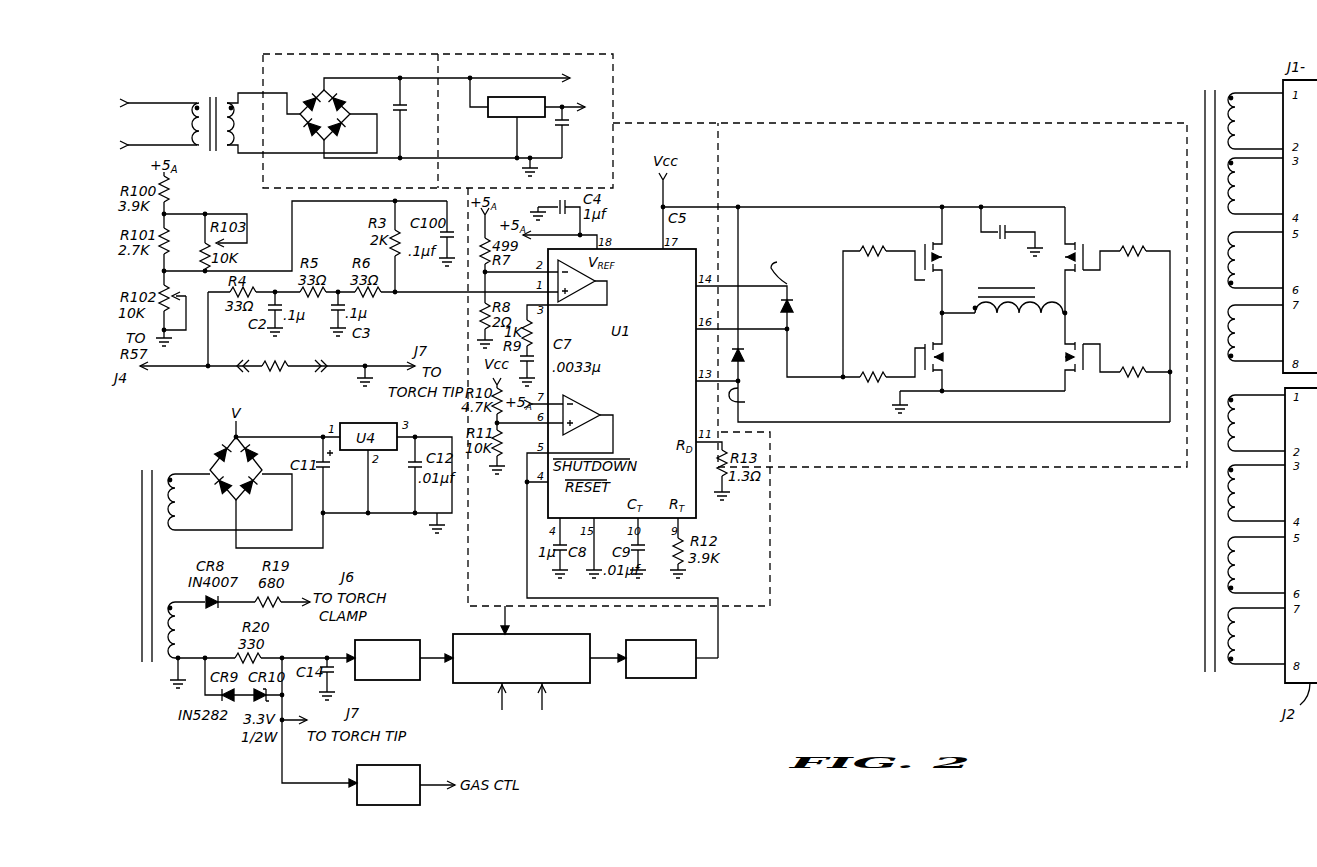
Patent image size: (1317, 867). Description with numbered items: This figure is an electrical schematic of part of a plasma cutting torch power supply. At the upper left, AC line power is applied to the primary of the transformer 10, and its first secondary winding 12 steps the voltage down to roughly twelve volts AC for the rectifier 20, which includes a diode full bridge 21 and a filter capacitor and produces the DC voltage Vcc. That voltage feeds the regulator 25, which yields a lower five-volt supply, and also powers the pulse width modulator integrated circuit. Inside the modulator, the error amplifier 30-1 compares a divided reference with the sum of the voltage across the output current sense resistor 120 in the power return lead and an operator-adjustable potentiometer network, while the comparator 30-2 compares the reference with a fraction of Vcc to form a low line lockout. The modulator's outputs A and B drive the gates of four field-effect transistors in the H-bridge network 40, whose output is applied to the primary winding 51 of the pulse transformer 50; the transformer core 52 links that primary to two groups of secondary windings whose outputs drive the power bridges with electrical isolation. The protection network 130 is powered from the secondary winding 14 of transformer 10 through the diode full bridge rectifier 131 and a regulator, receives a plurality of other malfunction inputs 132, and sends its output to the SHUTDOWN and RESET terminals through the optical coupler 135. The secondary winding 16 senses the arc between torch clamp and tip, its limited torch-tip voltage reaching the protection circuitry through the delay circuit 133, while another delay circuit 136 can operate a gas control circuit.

The transformer 10 is at (197, 160).
The first secondary winding 12 is at (232, 152).
The secondary winding 14 is at (176, 532).
The secondary winding 16 is at (179, 598).
The rectifier 20 is at (263, 60).
The diode full bridge 21 is at (316, 84).
The regulator 25 is at (500, 118).
The error amplifier 30-1 is at (607, 285).
The comparator 30-2 is at (600, 406).
The H-bridge network 40 is at (958, 123).
The pulse transformer 50 is at (1113, 419).
The primary winding 51 is at (1039, 309).
The transformer core 52 is at (1238, 718).
The output current sense resistor 120 is at (286, 362).
The protection network 130 is at (537, 634).
The diode full bridge rectifier 131 is at (222, 444).
The inputs 132 is at (523, 712).
The delay circuit 133 is at (383, 640).
The optical coupler 135 is at (668, 678).
The delay circuit 136 is at (395, 765).